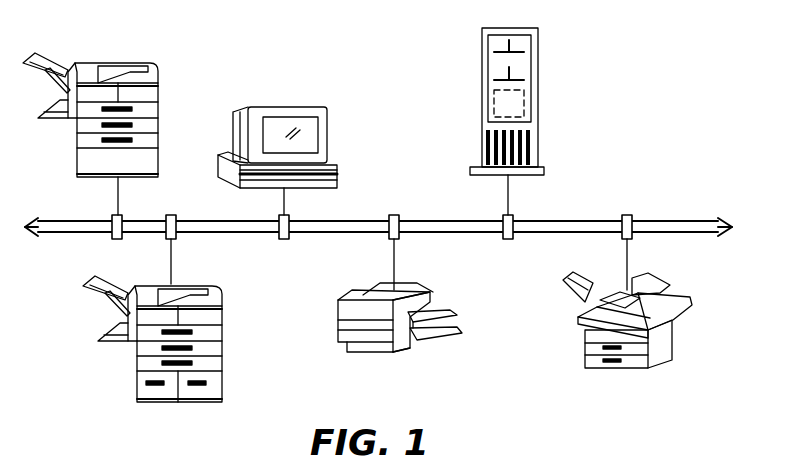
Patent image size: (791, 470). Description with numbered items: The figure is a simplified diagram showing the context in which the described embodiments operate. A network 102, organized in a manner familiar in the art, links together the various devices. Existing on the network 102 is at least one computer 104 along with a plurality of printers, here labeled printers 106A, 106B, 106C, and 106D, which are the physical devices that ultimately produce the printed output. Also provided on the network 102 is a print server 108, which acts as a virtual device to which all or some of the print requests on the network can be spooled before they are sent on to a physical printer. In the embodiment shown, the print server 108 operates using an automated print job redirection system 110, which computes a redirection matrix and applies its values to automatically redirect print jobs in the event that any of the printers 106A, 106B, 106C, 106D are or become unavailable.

The network 102 is at (655, 220).
The computer 104 is at (338, 178).
The printer 106A is at (223, 313).
The printer 106B is at (372, 355).
The printer 106C is at (598, 355).
The printer 106D is at (160, 92).
The print server 108 is at (528, 111).
The automated print job redirection system 110 is at (532, 100).